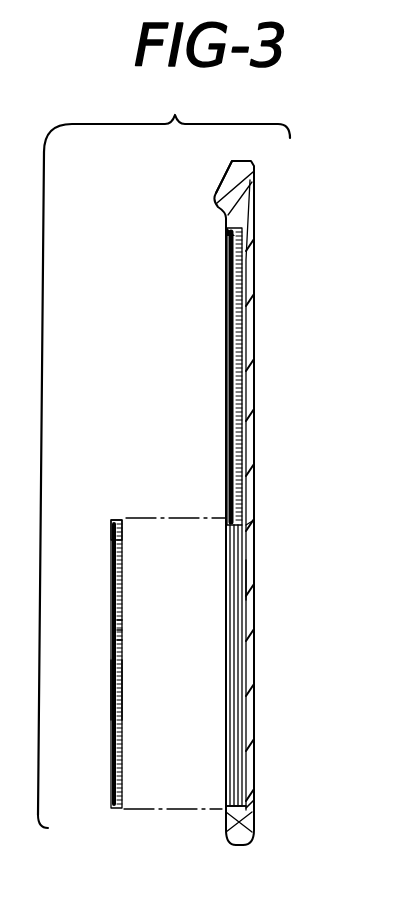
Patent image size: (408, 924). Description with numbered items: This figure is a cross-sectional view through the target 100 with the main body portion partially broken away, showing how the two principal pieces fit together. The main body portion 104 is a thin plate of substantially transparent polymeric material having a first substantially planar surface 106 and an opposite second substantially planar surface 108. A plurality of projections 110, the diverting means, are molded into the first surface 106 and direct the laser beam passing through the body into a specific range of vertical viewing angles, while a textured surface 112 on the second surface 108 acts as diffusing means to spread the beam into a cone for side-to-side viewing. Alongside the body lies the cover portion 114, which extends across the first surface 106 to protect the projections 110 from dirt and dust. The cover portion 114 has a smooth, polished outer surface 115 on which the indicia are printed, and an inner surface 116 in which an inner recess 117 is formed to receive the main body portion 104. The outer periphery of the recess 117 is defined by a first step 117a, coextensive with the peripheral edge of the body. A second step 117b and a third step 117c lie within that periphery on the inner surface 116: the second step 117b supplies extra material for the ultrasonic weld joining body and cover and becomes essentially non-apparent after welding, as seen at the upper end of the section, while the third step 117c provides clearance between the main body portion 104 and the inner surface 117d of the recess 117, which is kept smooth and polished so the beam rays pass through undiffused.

The target 100 is at (162, 226).
The main body portion 104 is at (226, 467).
The first surface 106 is at (122, 689).
The second surface 108 is at (112, 689).
The projections 110 is at (123, 622).
The textured surface 112 is at (112, 540).
The cover portion 114 is at (248, 336).
The outer surface 115 is at (250, 518).
The inner surface 116 is at (226, 808).
The inner recess 117 is at (236, 750).
The first step 117a is at (228, 238).
The second step 117b is at (250, 822).
The third step 117c is at (256, 192).
The inner surface of the recess 117d is at (244, 582).